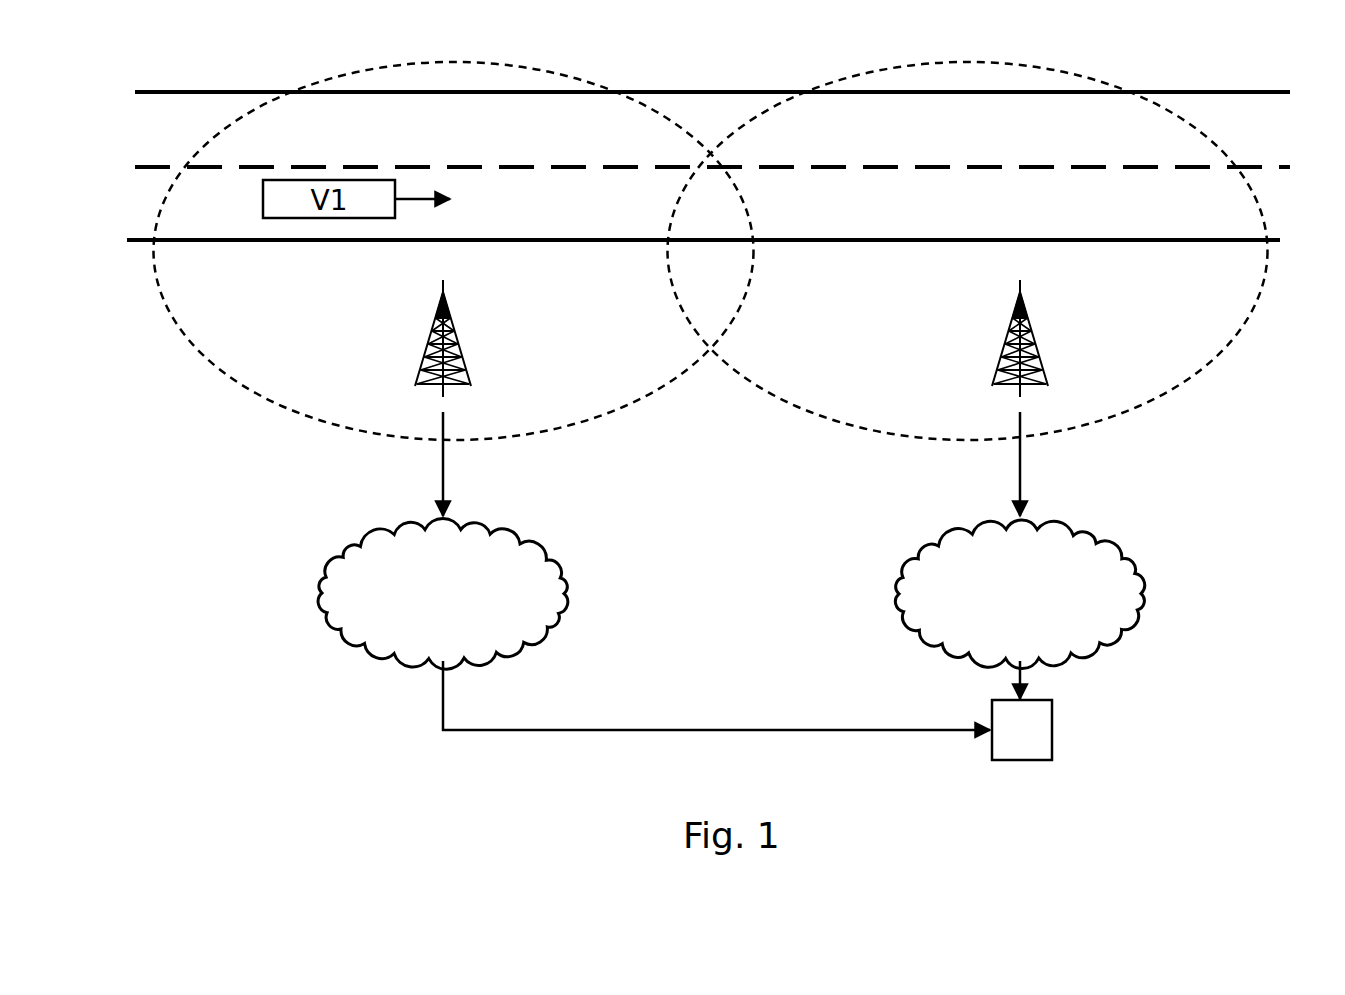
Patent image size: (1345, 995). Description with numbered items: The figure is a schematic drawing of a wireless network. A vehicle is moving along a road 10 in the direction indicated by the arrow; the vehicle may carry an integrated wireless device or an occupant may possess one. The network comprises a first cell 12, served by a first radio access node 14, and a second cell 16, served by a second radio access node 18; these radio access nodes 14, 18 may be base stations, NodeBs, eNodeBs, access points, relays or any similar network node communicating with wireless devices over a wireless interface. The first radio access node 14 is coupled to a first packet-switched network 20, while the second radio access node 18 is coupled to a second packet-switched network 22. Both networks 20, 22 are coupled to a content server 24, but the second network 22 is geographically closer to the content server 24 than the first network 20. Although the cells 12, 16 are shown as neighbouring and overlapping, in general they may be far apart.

The road 10 is at (1265, 91).
The first cell 12 is at (163, 297).
The first radio access node 14 is at (462, 357).
The second cell 16 is at (1240, 328).
The second radio access node 18 is at (1010, 328).
The first packet-switched network 20 is at (318, 594).
The second packet-switched network 22 is at (1140, 595).
The content server 24 is at (1052, 715).